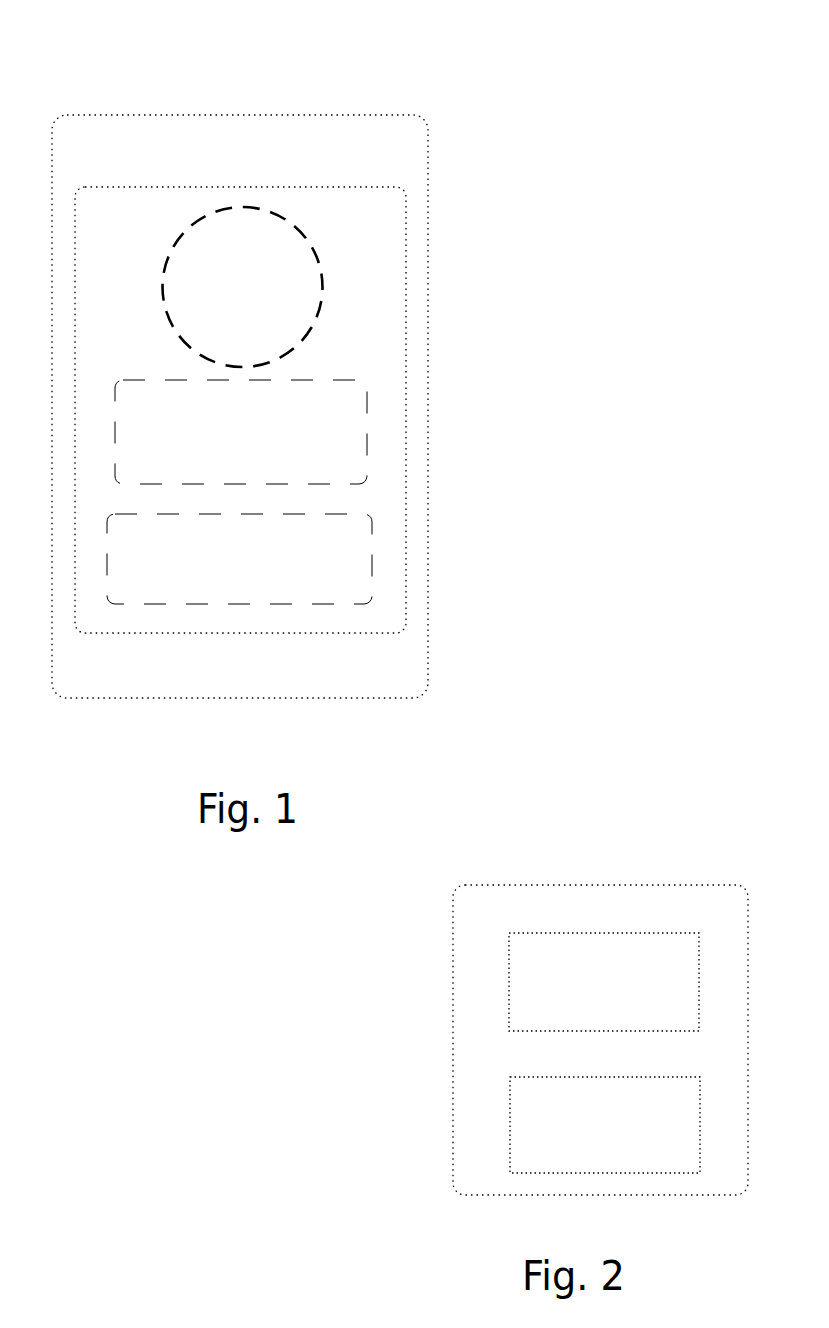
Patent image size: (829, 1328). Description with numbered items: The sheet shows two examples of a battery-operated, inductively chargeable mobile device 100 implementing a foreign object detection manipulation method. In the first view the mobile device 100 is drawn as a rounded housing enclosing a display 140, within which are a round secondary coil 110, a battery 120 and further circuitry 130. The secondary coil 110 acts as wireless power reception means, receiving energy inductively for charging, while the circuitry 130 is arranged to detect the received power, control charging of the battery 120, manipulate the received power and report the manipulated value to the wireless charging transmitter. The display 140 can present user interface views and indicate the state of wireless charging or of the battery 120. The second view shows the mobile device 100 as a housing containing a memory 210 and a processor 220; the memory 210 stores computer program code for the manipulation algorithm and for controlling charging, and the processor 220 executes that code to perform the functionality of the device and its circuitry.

In FIG. 1, the mobile device 100 is at (448, 100).
In FIG. 2, the mobile device 100 is at (623, 853).
In FIG. 1, the display 140 is at (408, 228).
In FIG. 1, the secondary coil 110 is at (297, 320).
In FIG. 1, the battery 120 is at (368, 395).
In FIG. 1, the circuitry 130 is at (372, 590).
In FIG. 2, the memory 210 is at (510, 938).
In FIG. 2, the processor 220 is at (510, 1078).